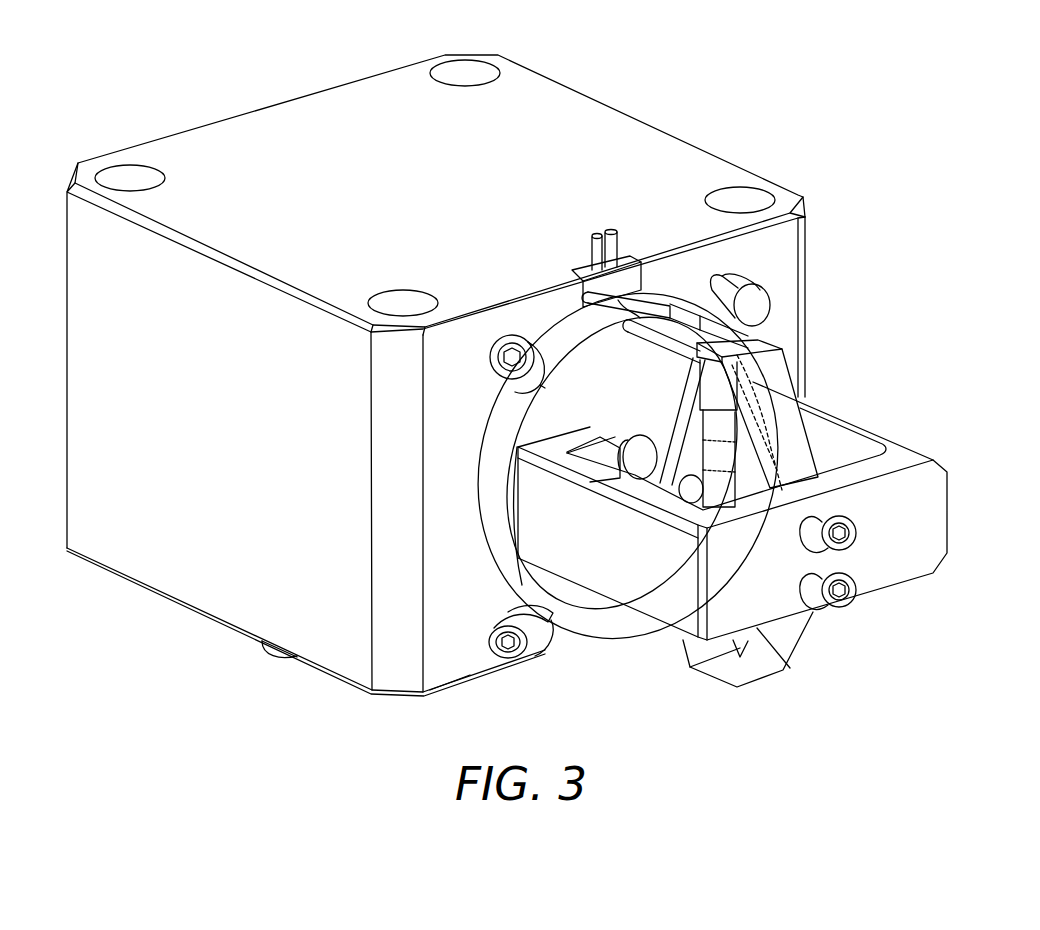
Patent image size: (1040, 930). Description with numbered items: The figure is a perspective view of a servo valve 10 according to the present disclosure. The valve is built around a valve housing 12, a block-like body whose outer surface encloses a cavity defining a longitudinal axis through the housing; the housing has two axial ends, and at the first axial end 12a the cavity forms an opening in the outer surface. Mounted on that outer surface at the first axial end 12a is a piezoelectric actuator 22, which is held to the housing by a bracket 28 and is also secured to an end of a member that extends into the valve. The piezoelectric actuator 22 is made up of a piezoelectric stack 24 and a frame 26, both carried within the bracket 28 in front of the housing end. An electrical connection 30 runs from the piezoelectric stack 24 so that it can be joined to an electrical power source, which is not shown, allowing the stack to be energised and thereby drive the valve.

The servo valve 10 is at (80, 124).
The valve housing 12 is at (345, 108).
The first axial end 12a is at (467, 669).
The piezoelectric actuator 22 is at (868, 296).
The piezoelectric stack 24 is at (713, 440).
The frame 26 is at (787, 407).
The bracket 28 is at (937, 513).
The electrical connection 30 is at (697, 323).